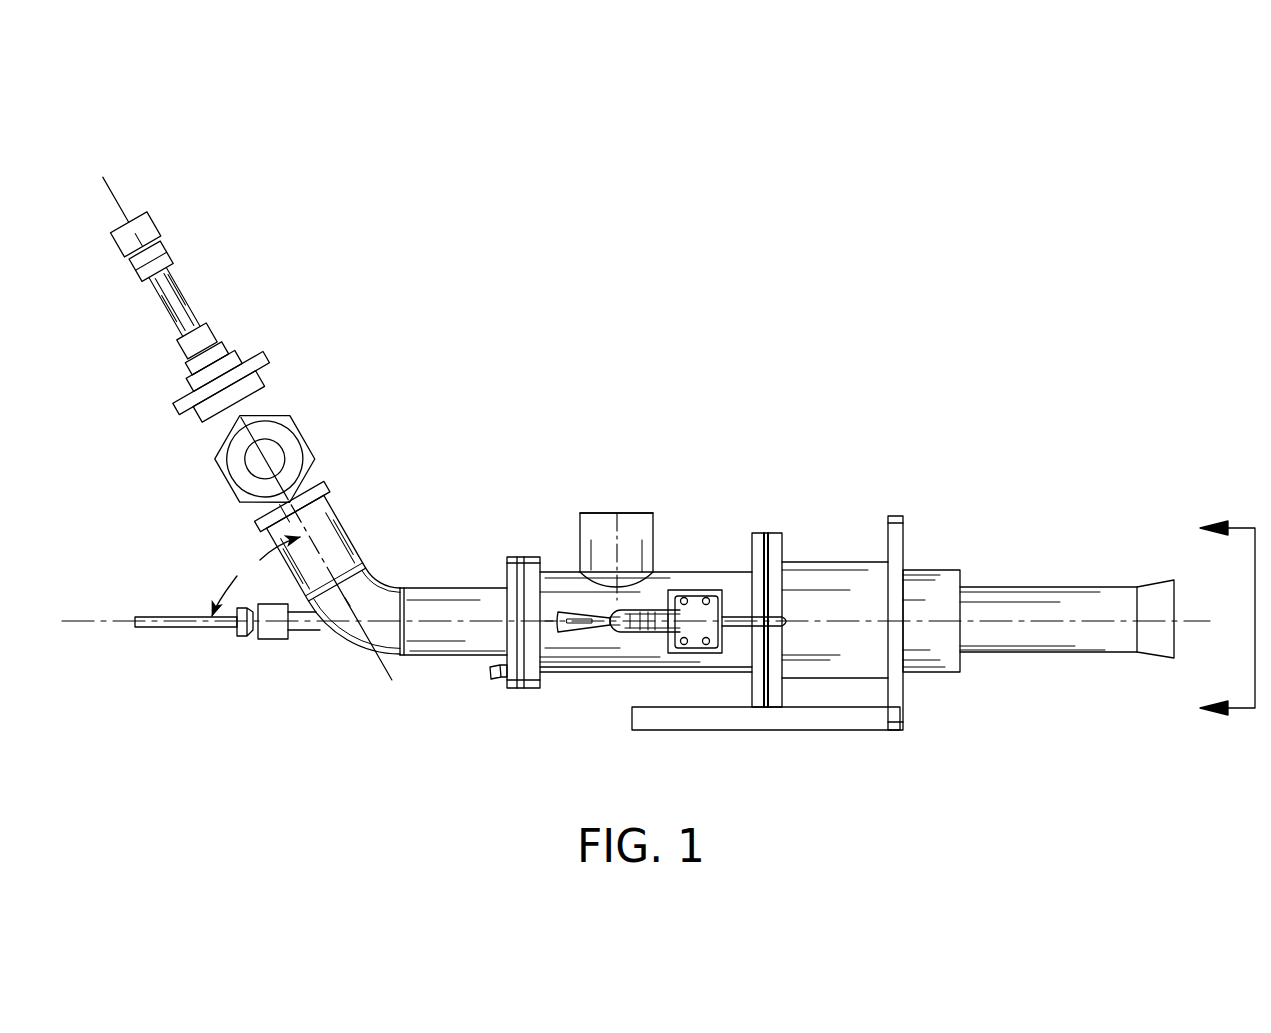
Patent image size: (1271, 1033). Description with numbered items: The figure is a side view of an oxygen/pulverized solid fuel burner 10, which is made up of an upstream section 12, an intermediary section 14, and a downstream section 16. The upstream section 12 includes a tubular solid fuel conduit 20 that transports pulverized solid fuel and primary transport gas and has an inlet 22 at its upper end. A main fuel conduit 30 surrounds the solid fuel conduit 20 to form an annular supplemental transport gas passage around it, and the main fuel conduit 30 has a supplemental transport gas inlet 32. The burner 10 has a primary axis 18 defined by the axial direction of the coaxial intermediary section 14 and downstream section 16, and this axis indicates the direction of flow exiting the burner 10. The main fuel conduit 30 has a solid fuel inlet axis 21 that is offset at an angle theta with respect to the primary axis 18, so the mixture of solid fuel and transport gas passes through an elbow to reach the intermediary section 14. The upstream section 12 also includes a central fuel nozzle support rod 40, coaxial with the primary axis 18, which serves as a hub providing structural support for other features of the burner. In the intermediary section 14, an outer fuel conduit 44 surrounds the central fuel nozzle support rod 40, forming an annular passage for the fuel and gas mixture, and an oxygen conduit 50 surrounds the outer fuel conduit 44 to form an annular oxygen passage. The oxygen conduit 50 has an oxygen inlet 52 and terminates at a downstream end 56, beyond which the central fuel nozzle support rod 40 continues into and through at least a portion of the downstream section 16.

The oxygen/pulverized solid fuel burner 10 is at (712, 328).
The upstream section 12 is at (128, 413).
The intermediary section 14 is at (557, 697).
The downstream section 16 is at (1078, 675).
The primary axis 18 is at (1190, 614).
The solid fuel conduit 20 is at (174, 302).
The solid fuel inlet axis 21 is at (103, 163).
The inlet 22 is at (135, 234).
The main fuel conduit 30 is at (268, 466).
The supplemental transport gas inlet 32 is at (264, 459).
The central fuel nozzle support rod 40 is at (158, 628).
The outer fuel conduit 44 is at (1033, 587).
The oxygen conduit 50 is at (634, 544).
The oxygen inlet 52 is at (631, 513).
The downstream end 56 is at (958, 573).